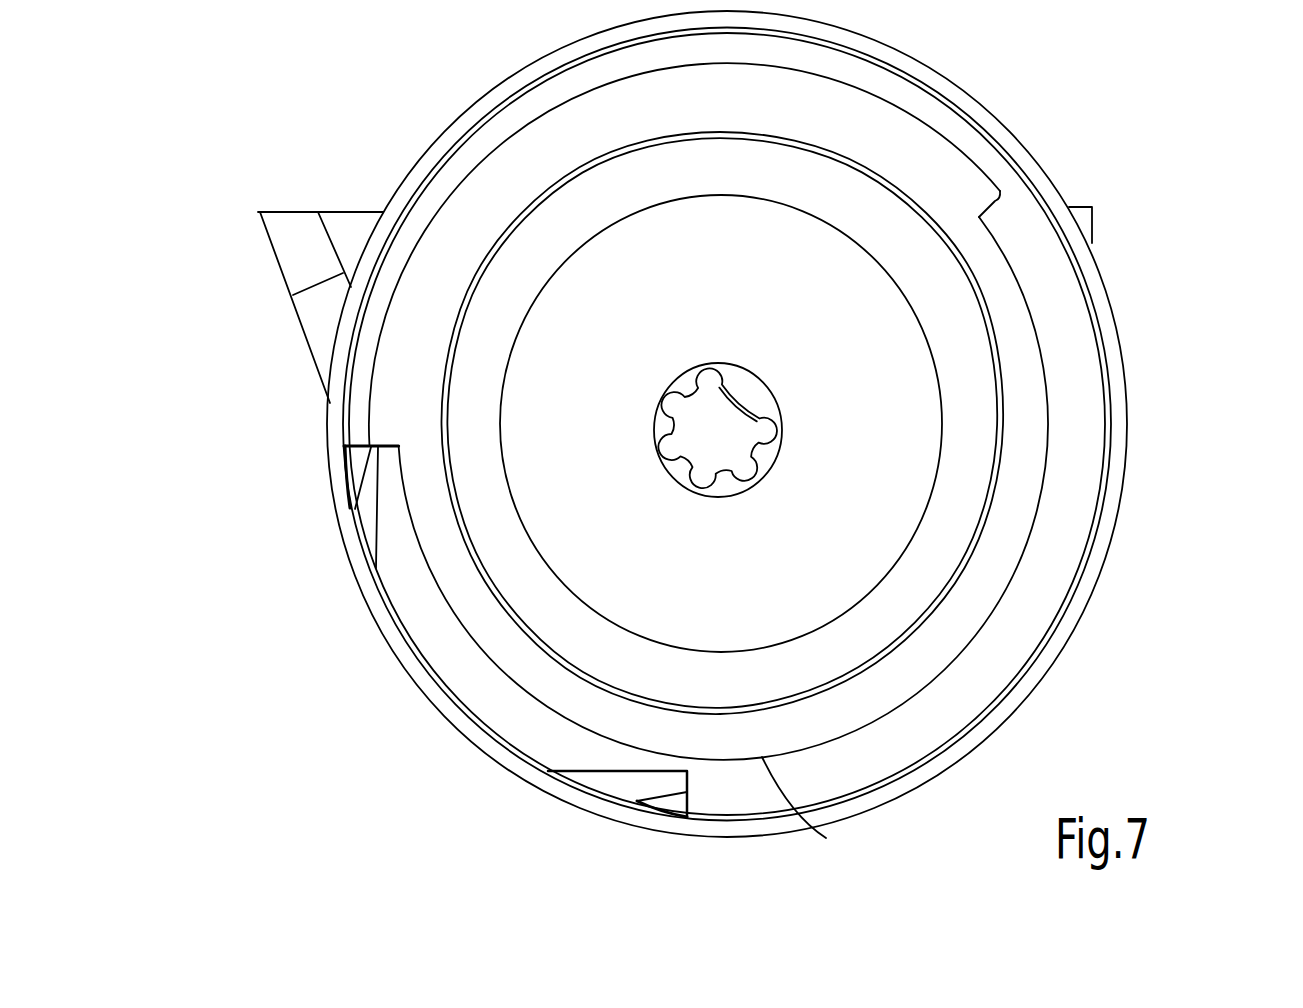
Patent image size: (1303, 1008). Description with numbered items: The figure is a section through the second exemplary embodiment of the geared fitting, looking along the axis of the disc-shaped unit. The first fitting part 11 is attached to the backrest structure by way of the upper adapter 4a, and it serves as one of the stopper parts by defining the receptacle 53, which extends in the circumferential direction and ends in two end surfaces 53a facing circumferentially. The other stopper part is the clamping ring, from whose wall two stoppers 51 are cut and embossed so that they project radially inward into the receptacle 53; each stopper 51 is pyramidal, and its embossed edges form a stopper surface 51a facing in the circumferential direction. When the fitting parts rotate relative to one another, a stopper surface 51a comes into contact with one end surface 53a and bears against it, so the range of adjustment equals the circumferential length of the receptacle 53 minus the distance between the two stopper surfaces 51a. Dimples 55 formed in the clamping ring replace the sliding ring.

The upper adapter 4a is at (293, 242).
The first fitting part 11 is at (1025, 408).
The stopper 51 is at (357, 483).
The stopper surface 51a is at (383, 428).
The receptacle 53 is at (1052, 521).
The end surface 53a is at (995, 217).
The dimple 55 is at (462, 630).